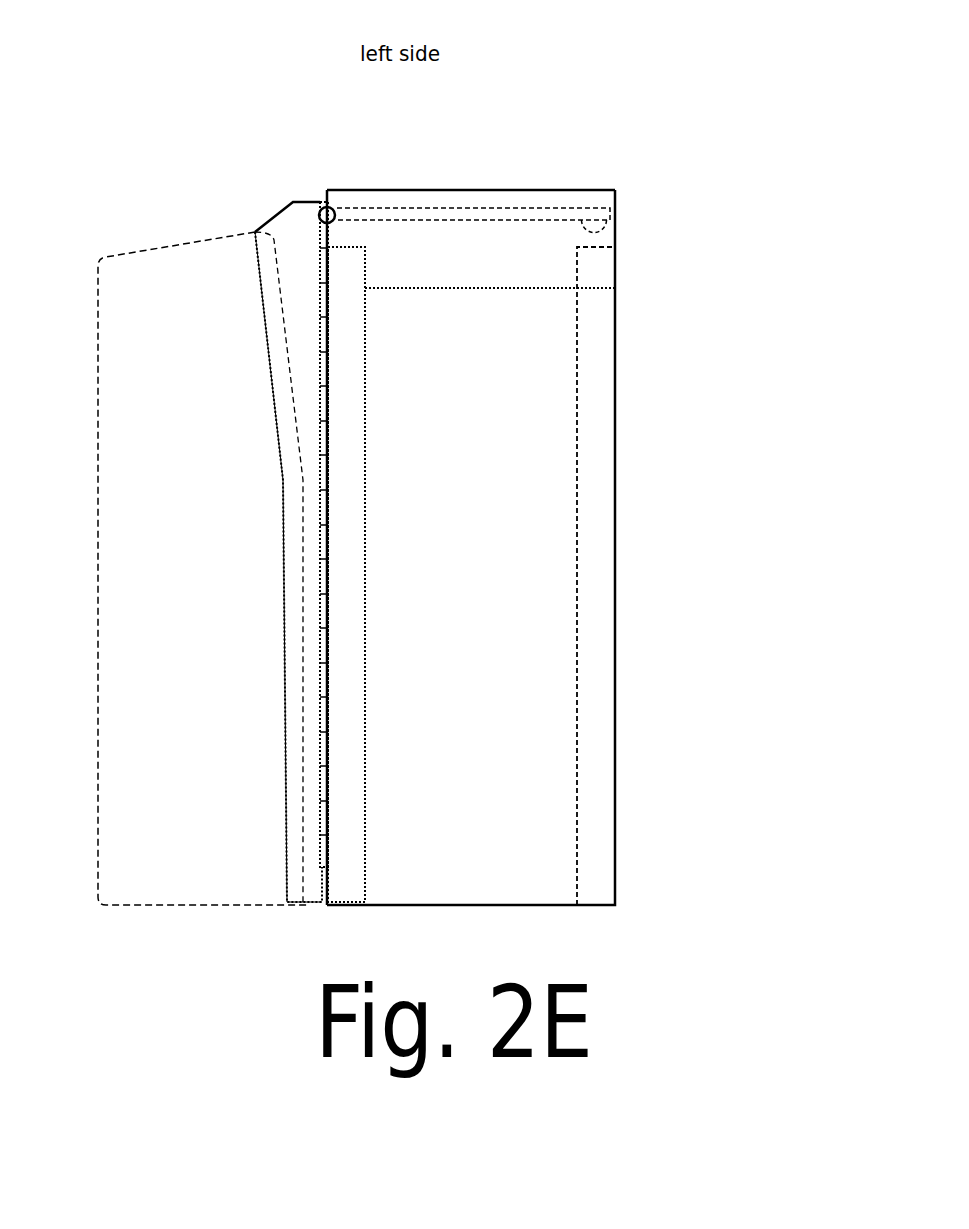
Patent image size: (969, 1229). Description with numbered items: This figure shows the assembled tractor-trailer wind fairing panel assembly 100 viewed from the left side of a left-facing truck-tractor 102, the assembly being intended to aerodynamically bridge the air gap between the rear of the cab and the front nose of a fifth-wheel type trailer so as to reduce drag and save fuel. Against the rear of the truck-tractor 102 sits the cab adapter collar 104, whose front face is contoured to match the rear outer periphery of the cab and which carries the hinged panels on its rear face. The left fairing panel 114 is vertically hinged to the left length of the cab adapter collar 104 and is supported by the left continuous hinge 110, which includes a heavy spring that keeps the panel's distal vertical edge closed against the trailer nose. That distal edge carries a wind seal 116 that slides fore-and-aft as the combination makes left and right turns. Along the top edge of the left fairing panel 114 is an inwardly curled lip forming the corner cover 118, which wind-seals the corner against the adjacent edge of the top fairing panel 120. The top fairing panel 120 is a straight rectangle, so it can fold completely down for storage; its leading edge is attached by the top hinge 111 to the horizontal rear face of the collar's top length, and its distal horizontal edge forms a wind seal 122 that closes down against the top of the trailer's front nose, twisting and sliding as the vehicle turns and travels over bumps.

The tractor-trailer wind fairing panel assembly 100 is at (191, 155).
The truck-tractor 102 is at (237, 598).
The cab adapter collar 104 is at (310, 905).
The left continuous hinge 110 is at (332, 643).
The top hinge 111 is at (320, 211).
The left fairing panel 114 is at (540, 585).
The wind seal 116 is at (598, 385).
The corner cover 118 is at (505, 261).
The top fairing panel 120 is at (387, 201).
The wind seal 122 is at (602, 227).